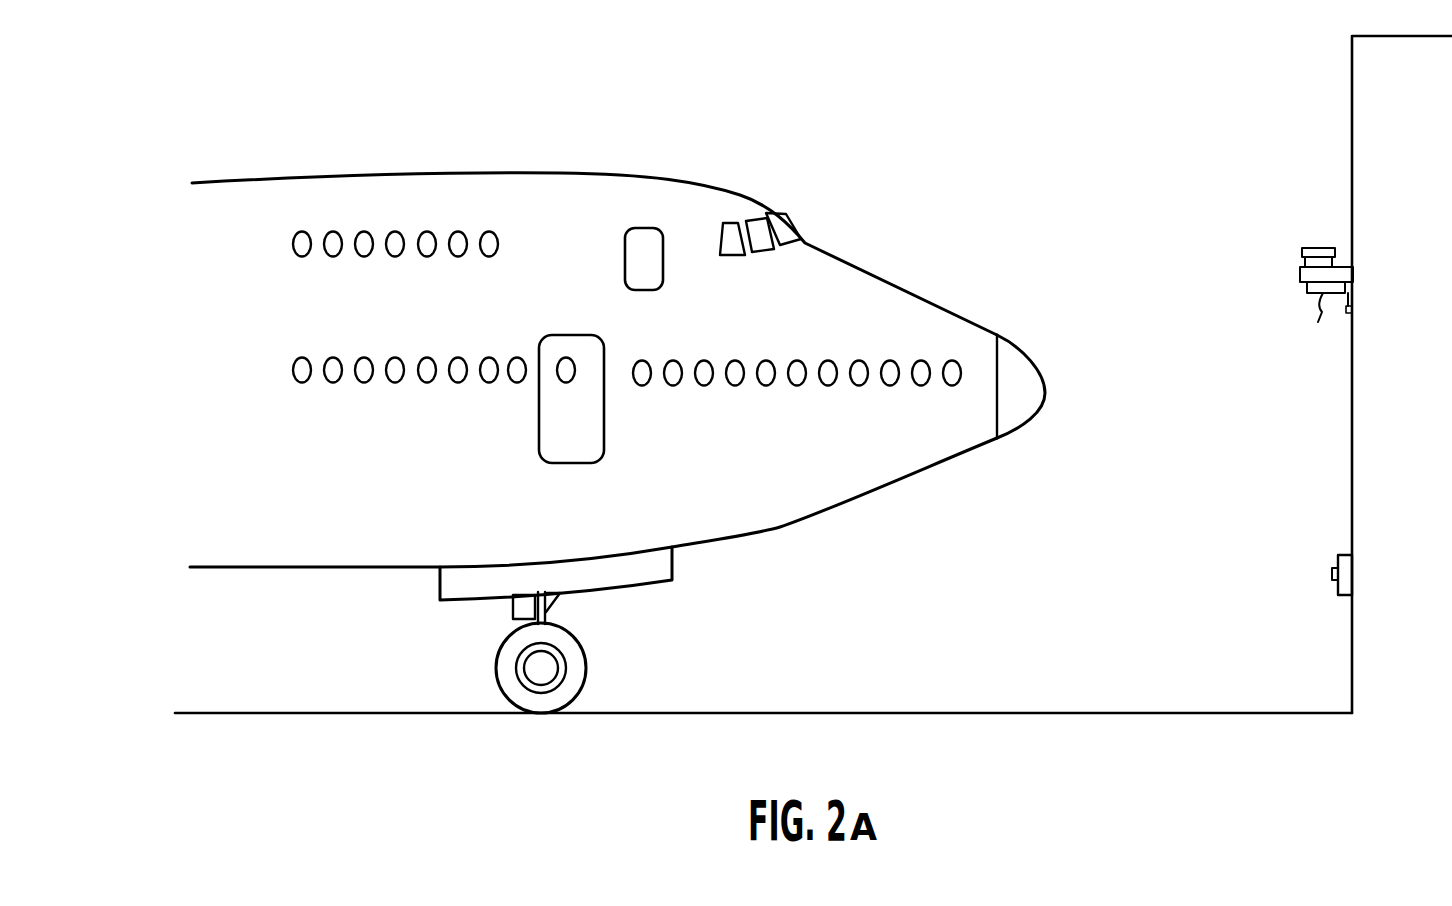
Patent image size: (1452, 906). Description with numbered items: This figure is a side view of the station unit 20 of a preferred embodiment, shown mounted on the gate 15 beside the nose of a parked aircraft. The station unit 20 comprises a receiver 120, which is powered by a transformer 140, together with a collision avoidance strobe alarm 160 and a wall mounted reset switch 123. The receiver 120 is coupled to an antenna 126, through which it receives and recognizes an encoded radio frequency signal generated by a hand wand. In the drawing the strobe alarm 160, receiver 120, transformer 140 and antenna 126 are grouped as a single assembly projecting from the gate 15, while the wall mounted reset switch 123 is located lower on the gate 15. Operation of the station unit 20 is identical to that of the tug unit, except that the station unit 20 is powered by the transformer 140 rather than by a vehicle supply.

The gate 15 is at (1344, 143).
The station unit 20 is at (1322, 278).
The collision avoidance strobe alarm 160 is at (1324, 246).
The receiver 120 is at (1332, 282).
The transformer 140 is at (1378, 301).
The antenna 126 is at (1333, 318).
The wall mounted reset switch 123 is at (1364, 567).